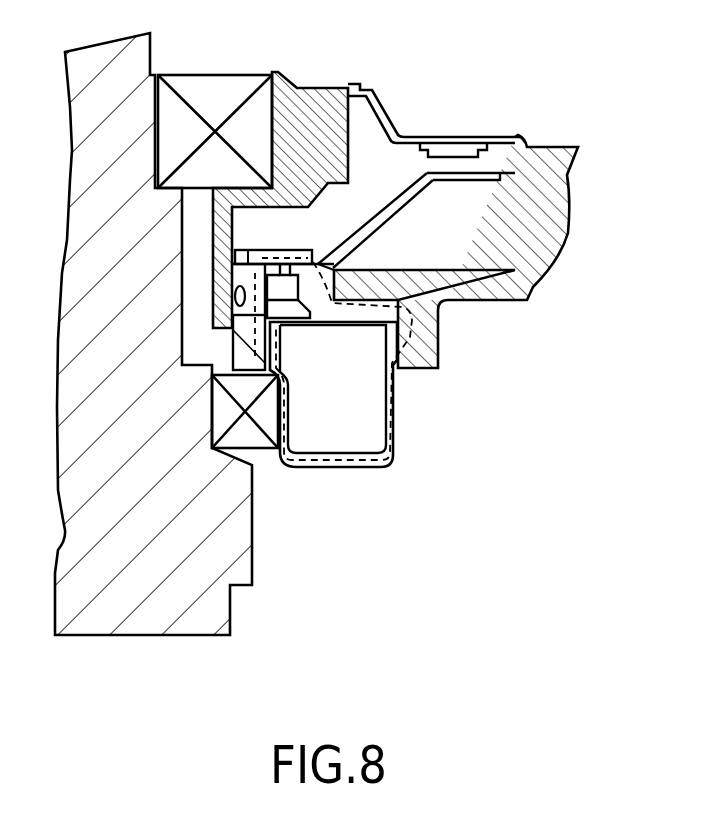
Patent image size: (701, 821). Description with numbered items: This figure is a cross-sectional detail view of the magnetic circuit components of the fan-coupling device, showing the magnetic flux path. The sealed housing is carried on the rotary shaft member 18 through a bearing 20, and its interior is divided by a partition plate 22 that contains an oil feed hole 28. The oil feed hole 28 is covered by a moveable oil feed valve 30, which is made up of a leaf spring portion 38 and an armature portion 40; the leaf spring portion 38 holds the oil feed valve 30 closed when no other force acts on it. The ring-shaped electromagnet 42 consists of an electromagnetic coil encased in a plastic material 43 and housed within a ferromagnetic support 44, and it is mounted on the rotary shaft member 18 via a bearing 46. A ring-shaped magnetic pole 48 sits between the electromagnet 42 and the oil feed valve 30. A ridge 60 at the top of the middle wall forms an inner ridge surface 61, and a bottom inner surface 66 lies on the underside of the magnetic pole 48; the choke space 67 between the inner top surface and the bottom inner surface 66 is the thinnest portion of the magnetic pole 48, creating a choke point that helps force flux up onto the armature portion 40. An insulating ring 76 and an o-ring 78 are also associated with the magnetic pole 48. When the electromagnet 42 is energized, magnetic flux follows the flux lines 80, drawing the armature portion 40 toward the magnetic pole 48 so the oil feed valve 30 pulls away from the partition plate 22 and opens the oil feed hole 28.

The rotary shaft member 18 is at (210, 603).
The bearing 20 is at (180, 128).
The partition plate 22 is at (368, 90).
The oil feed hole 28 is at (457, 150).
The oil feed valve 30 is at (517, 197).
The leaf spring portion 38 is at (328, 250).
The armature portion 40 is at (300, 256).
The electromagnet 42 is at (399, 409).
The plastic material 43 is at (355, 443).
The ferromagnetic support 44 is at (318, 467).
The bearing 46 is at (220, 412).
The magnetic pole 48 is at (415, 320).
The ridge 60 is at (333, 267).
The inner ridge surface 61 is at (313, 262).
The bottom inner surface 66 is at (278, 283).
The choke space 67 is at (265, 266).
The insulating ring 76 is at (280, 309).
The o-ring 78 is at (235, 295).
The flux lines 80 is at (387, 460).